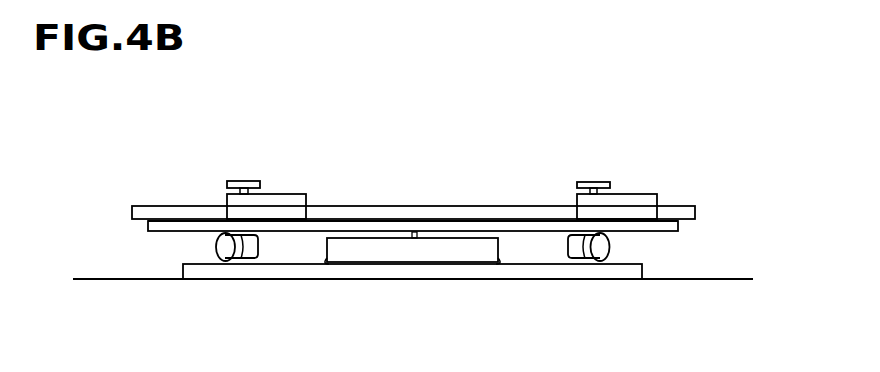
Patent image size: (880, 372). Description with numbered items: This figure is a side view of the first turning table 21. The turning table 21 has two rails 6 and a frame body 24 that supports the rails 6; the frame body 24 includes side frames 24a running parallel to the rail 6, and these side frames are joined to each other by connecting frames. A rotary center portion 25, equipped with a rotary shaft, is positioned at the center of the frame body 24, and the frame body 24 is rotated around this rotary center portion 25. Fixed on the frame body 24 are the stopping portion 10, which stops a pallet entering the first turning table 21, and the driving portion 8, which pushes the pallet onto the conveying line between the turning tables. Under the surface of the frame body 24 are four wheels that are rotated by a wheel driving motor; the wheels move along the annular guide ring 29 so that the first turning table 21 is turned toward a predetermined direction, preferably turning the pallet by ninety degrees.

The first turning table 21 is at (678, 123).
The rail 6 is at (152, 215).
The driving portion 8 is at (630, 206).
The stopping portion 10 is at (279, 206).
The frame body 24 is at (652, 230).
The side frame 24a is at (174, 225).
The rotary center portion 25 is at (438, 250).
The annular guide ring 29 is at (633, 273).